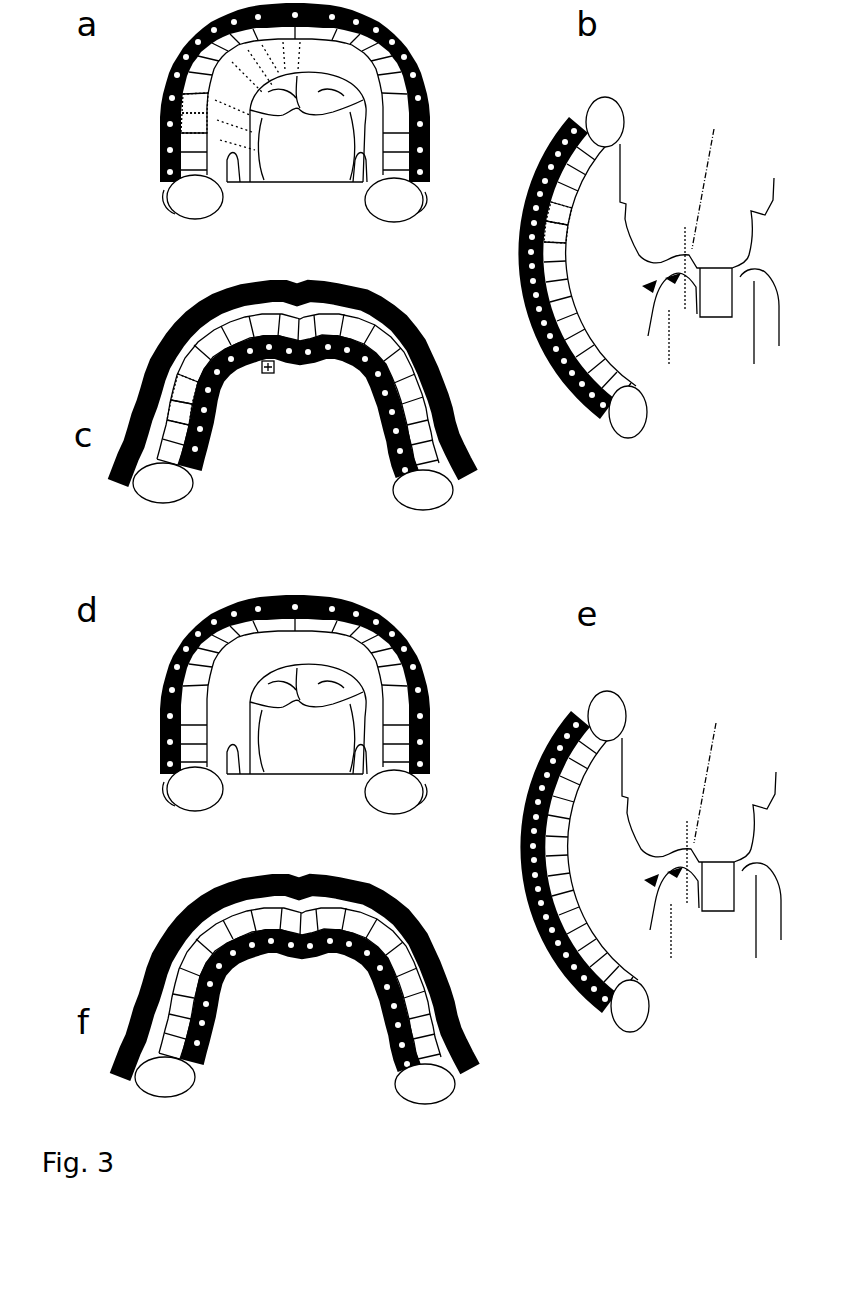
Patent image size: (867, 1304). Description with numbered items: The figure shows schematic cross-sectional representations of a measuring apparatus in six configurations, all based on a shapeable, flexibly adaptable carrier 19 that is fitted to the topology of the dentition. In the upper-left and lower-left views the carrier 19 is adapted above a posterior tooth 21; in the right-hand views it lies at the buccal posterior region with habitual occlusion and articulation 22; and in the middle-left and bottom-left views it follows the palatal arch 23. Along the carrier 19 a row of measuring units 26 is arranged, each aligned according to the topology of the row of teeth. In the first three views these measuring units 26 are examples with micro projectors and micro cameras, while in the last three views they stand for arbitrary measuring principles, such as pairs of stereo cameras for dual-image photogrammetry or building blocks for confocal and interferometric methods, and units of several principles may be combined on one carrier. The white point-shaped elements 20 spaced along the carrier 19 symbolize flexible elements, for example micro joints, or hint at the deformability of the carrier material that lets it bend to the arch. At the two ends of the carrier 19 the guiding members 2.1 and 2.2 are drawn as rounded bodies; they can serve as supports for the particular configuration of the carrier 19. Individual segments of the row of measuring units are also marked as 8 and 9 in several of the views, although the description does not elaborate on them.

The guiding member 2.1 is at (192, 200).
The guiding member 2.2 is at (408, 202).
The tooth segment 8 is at (160, 107).
The adjacent tooth segment 9 is at (160, 138).
The carrier 19 is at (162, 86).
The flexible elements 20 is at (177, 52).
The posterior tooth 21 is at (313, 142).
The habitual occlusion and articulation 22 is at (710, 477).
The palatal arch 23 is at (170, 335).
The measuring units 26 is at (160, 125).